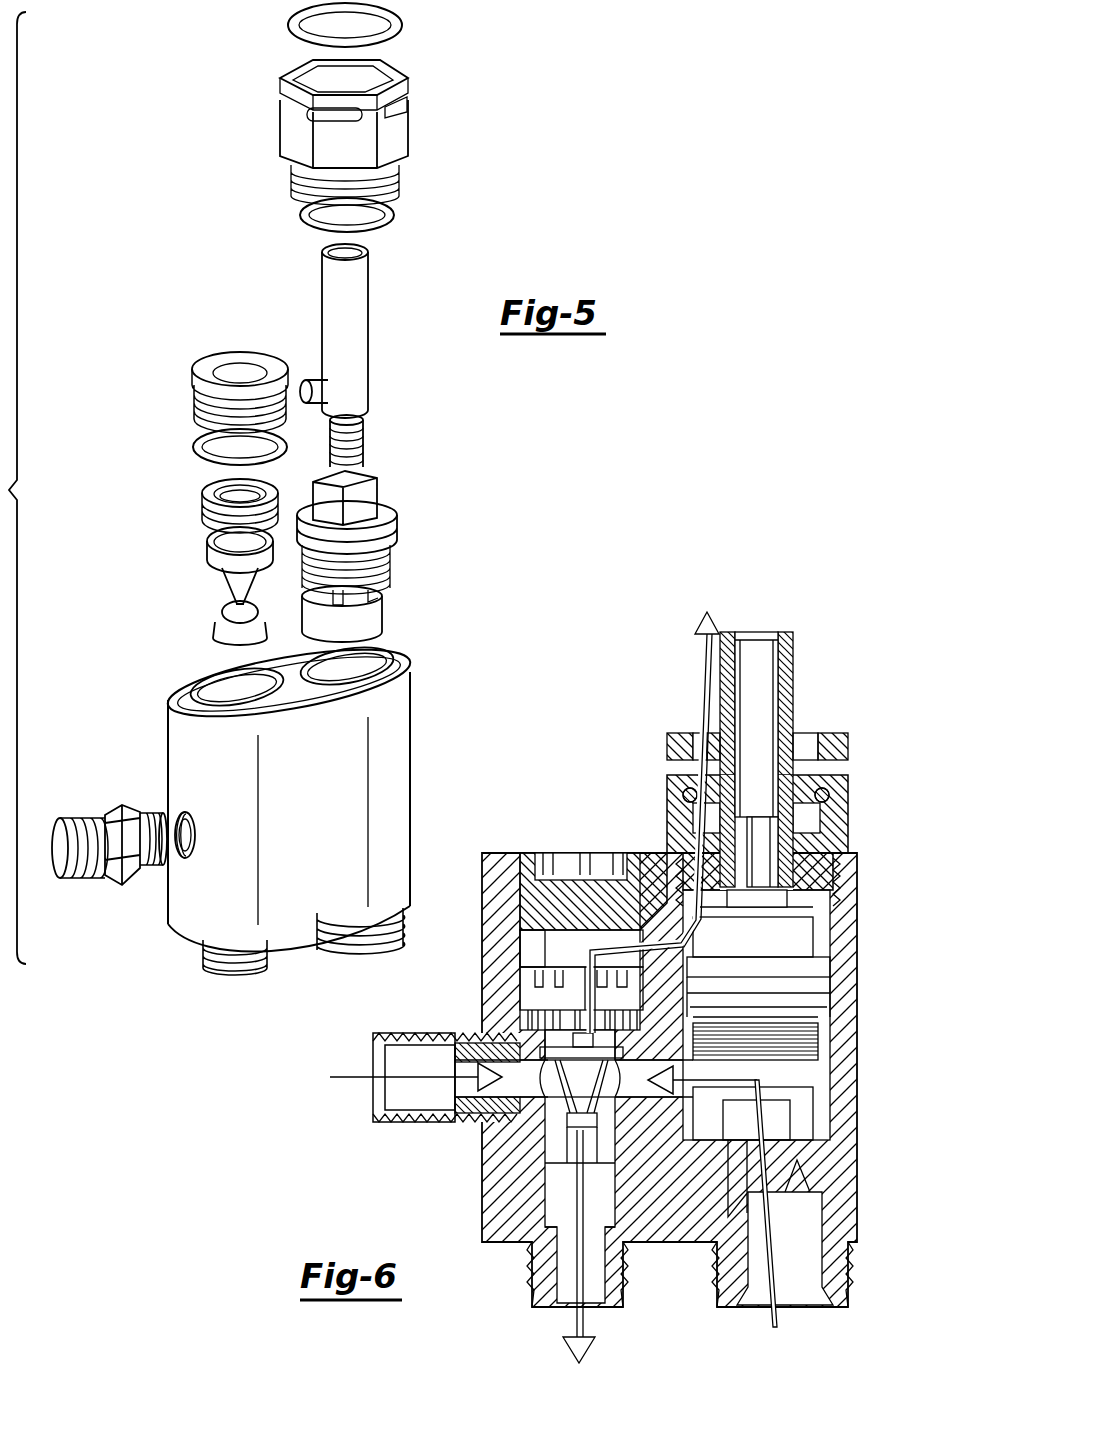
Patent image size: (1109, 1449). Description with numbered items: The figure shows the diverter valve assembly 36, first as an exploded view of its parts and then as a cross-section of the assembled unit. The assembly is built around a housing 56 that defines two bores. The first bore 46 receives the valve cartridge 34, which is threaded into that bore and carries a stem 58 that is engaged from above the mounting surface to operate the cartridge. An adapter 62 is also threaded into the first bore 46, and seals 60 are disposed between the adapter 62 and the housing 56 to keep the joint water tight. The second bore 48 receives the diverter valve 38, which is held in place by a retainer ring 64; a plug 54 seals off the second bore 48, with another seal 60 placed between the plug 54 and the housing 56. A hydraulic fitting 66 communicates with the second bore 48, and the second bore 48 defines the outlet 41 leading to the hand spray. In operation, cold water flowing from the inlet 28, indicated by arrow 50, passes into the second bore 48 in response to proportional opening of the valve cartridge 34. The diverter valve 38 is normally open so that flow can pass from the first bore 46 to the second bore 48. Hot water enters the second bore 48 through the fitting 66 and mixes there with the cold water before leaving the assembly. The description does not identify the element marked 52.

In FIG. 5, the inlet 28 is at (360, 951).
In FIG. 6, the inlet 28 is at (833, 1306).
In FIG. 5, the valve cartridge 34 is at (386, 545).
In FIG. 6, the valve cartridge 34 is at (785, 941).
In FIG. 6, the diverter valve assembly 36 is at (848, 640).
In FIG. 5, the diverter valve 38 is at (212, 552).
In FIG. 6, the diverter valve 38 is at (572, 1127).
In FIG. 5, the outlet 41 is at (233, 969).
In FIG. 6, the outlet 41 is at (549, 1305).
In FIG. 5, the first bore 46 is at (360, 668).
In FIG. 6, the first bore 46 is at (812, 928).
In FIG. 5, the second bore 48 is at (226, 684).
In FIG. 6, the second bore 48 is at (546, 953).
In FIG. 6, the arrow 50 is at (772, 1128).
In FIG. 6, the passage 52 is at (629, 918).
In FIG. 5, the plug 54 is at (202, 388).
In FIG. 6, the plug 54 is at (531, 857).
In FIG. 5, the housing 56 is at (398, 713).
In FIG. 5, the stem 58 is at (350, 282).
In FIG. 6, the stem 58 is at (796, 676).
In FIG. 5, the seal 60 is at (292, 29).
In FIG. 5, the adapter 62 is at (396, 134).
In FIG. 5, the retainer ring 64 is at (206, 496).
In FIG. 5, the hydraulic fitting 66 is at (126, 872).
In FIG. 6, the hydraulic fitting 66 is at (428, 1122).